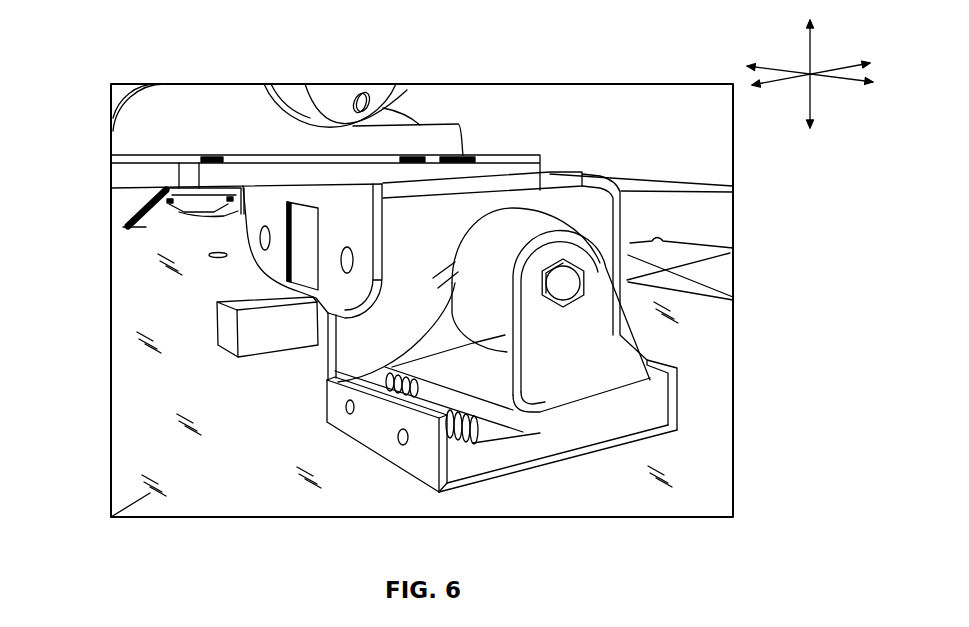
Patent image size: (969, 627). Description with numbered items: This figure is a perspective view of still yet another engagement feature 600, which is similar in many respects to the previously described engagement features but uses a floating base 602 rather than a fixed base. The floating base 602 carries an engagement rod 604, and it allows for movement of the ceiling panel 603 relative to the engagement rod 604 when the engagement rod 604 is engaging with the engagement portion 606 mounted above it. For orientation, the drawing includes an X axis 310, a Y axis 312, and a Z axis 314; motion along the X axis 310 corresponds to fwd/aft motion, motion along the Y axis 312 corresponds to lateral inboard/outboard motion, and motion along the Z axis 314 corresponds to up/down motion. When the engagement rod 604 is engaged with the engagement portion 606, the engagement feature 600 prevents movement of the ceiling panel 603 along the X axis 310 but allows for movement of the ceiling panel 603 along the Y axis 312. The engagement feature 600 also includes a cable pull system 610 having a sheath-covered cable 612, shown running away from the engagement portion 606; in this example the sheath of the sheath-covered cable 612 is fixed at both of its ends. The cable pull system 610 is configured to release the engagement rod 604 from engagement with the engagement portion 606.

The engagement feature 600 is at (122, 255).
The floating base 602 is at (448, 484).
The ceiling panel 603 is at (670, 492).
The engagement rod 604 is at (546, 225).
The engagement portion 606 is at (418, 212).
The cable pull system 610 is at (718, 347).
The sheath-covered cable 612 is at (707, 262).
The X axis 310 is at (837, 80).
The Y axis 312 is at (785, 82).
The Z axis 314 is at (808, 45).